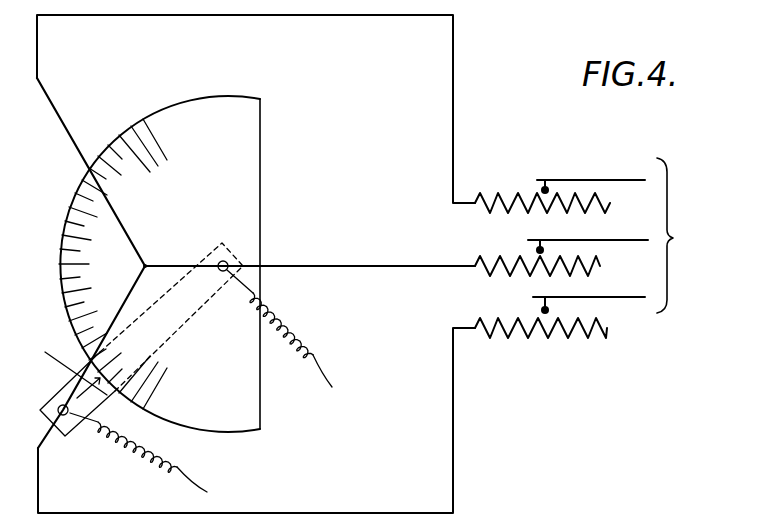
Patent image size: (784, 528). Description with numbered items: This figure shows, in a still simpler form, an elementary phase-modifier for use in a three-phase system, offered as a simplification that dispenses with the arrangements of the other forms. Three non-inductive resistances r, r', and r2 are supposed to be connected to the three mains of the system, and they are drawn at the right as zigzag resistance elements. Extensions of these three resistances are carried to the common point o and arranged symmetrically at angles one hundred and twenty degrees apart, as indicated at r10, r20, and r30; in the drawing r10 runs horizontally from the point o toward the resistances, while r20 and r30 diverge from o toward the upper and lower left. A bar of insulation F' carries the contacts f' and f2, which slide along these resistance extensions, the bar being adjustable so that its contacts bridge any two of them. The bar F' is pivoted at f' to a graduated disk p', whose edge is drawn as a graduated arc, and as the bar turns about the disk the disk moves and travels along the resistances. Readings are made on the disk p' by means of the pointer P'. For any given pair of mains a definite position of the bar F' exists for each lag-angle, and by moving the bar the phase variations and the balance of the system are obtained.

The resistance extension r20 is at (91, 172).
The resistance extension r30 is at (54, 444).
The graduated disk p' is at (138, 264).
The point o is at (151, 253).
The resistance extension r10 is at (310, 252).
The contact f' is at (269, 305).
The bar of insulation F' is at (141, 339).
The pointer P' is at (62, 359).
The contact f2 is at (58, 407).
The non-inductive resistance r is at (560, 200).
The non-inductive resistance r' is at (561, 260).
The non-inductive resistance r2 is at (560, 320).